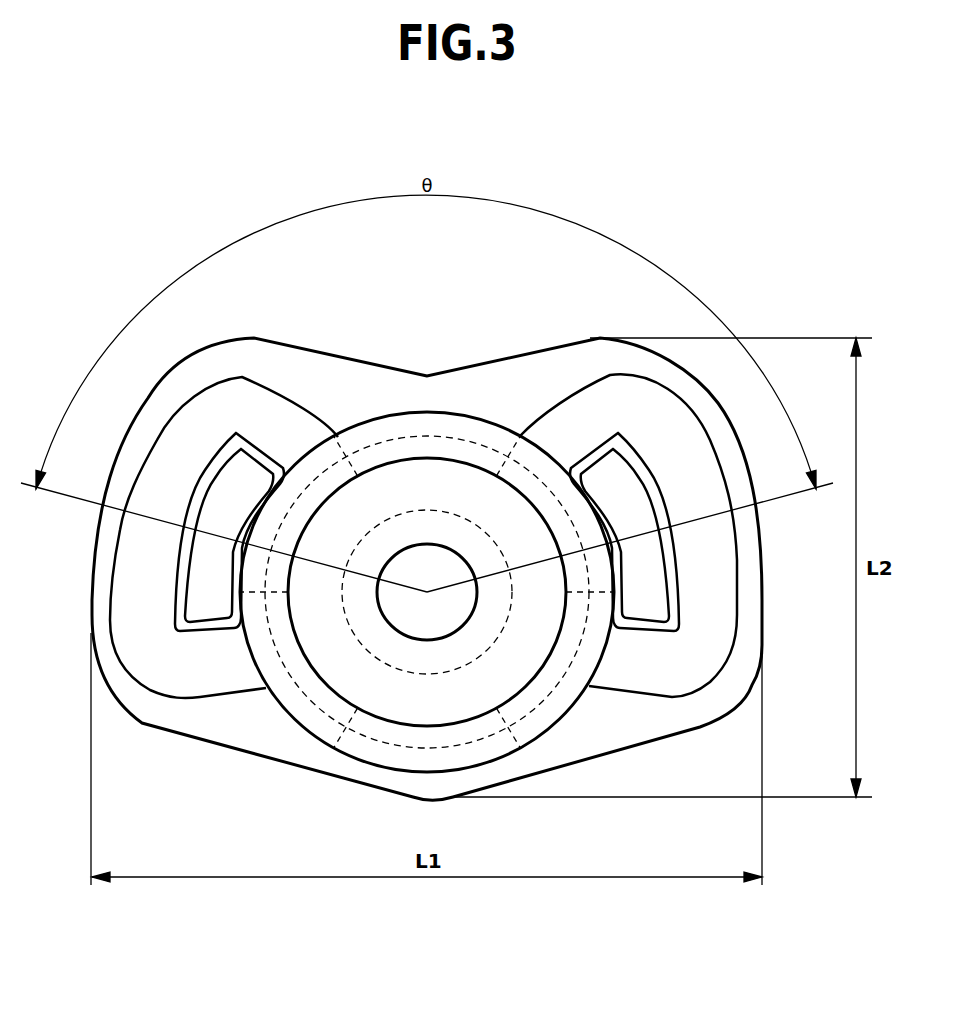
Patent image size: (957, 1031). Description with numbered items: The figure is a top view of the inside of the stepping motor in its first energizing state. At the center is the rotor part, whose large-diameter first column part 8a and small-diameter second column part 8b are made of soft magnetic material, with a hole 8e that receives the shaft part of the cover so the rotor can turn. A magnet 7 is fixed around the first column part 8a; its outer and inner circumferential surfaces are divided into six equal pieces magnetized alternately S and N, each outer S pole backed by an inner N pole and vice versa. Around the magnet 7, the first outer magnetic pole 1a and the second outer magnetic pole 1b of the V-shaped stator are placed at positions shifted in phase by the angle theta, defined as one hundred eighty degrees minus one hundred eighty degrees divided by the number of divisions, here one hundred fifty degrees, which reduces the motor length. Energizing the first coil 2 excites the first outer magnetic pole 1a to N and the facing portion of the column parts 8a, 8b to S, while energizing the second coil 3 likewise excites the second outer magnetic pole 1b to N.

The first outer magnetic pole 1a is at (202, 559).
The second outer magnetic pole 1b is at (650, 566).
The first coil 2 is at (233, 405).
The second coil 3 is at (580, 418).
The magnet 7 is at (361, 422).
The first column part 8a is at (464, 492).
The second column part 8b is at (373, 640).
The hole 8e is at (448, 616).